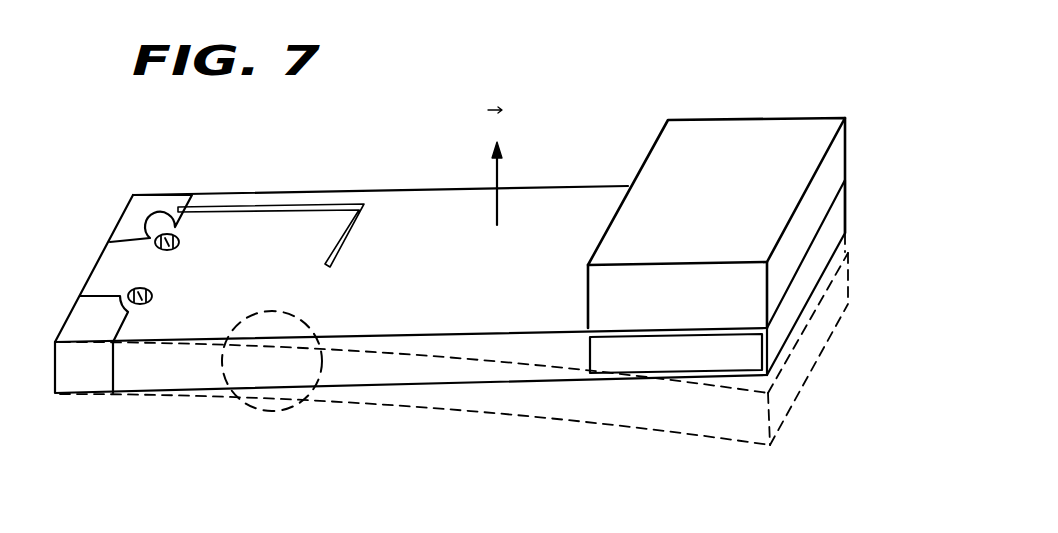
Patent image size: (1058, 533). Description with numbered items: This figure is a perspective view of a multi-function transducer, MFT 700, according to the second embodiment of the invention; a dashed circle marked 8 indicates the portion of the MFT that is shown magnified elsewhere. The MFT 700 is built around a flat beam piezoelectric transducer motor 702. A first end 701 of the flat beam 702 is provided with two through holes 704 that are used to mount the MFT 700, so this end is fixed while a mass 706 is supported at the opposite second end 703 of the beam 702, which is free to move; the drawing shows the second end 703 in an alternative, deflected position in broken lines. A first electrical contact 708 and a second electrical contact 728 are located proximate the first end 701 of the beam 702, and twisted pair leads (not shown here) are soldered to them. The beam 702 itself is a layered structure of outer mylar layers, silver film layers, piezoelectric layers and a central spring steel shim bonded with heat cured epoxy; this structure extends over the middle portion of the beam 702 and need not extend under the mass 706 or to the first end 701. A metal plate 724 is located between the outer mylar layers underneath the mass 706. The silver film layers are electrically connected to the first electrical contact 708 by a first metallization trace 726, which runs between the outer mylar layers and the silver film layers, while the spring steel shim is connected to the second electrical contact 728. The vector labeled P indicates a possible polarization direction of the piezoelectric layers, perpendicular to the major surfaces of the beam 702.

The MFT 700 is at (648, 52).
The first end 701 is at (102, 260).
The flat beam piezoelectric transducer motor 702 is at (420, 205).
The second end 703 is at (795, 302).
The through holes 704 is at (179, 238).
The mass 706 is at (747, 133).
The first electrical contact 708 is at (158, 202).
The metal plate 724 is at (655, 362).
The first metallization trace 726 is at (285, 208).
The second electrical contact 728 is at (82, 310).
The detail region shown in FIG. 8 is at (253, 408).